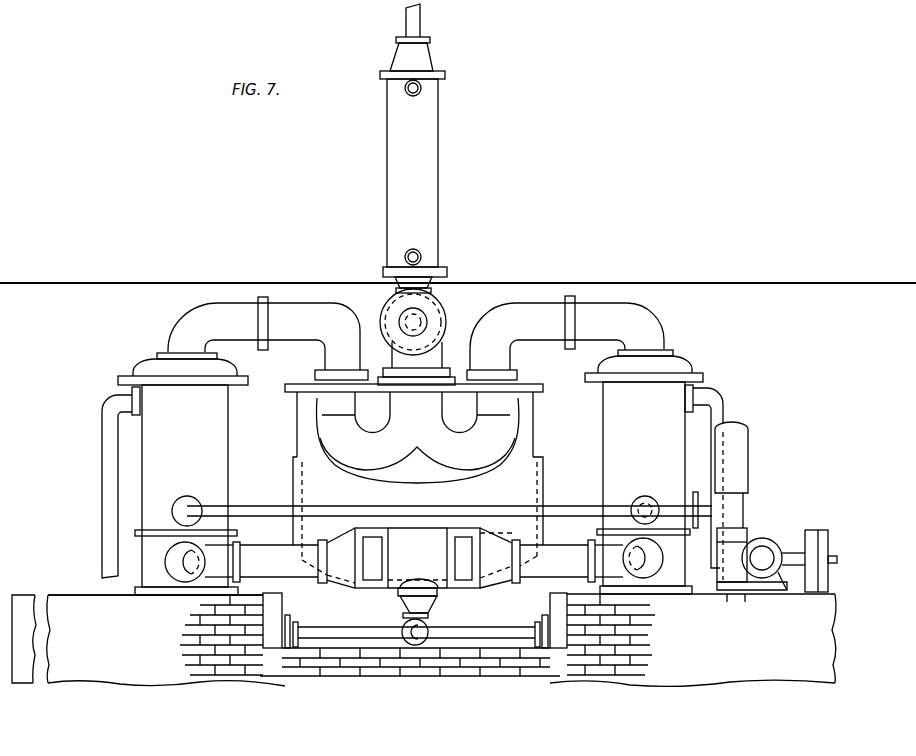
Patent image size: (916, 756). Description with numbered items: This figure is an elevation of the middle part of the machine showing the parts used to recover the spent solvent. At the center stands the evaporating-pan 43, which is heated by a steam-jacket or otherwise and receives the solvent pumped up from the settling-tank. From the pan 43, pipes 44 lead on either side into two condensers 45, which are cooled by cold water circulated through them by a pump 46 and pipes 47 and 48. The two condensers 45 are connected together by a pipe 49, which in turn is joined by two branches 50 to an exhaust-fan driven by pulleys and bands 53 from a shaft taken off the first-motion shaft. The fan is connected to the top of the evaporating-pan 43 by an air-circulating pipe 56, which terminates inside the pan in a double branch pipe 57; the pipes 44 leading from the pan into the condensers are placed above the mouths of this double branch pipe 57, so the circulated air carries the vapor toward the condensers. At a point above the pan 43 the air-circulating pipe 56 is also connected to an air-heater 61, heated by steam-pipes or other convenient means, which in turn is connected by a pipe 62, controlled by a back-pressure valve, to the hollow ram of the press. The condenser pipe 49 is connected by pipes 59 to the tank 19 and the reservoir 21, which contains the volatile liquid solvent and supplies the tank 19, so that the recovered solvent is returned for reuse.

The pipe 62 is at (424, 22).
The air-heater 61 is at (413, 182).
The air-circulating pipe 56 is at (440, 350).
The pipes 44 is at (416, 338).
The condensers 45 is at (410, 472).
The pipe 48 is at (104, 478).
The pipe 47 is at (442, 508).
The evaporating-pan 43 is at (418, 483).
The double branch pipe 57 is at (417, 437).
The pipe 49 is at (410, 533).
The branches 50 is at (417, 558).
The pump 46 is at (748, 543).
The bands 53 is at (428, 603).
The pipes 59 is at (486, 628).
The reservoir 21 is at (148, 640).
The tank 19 is at (693, 640).